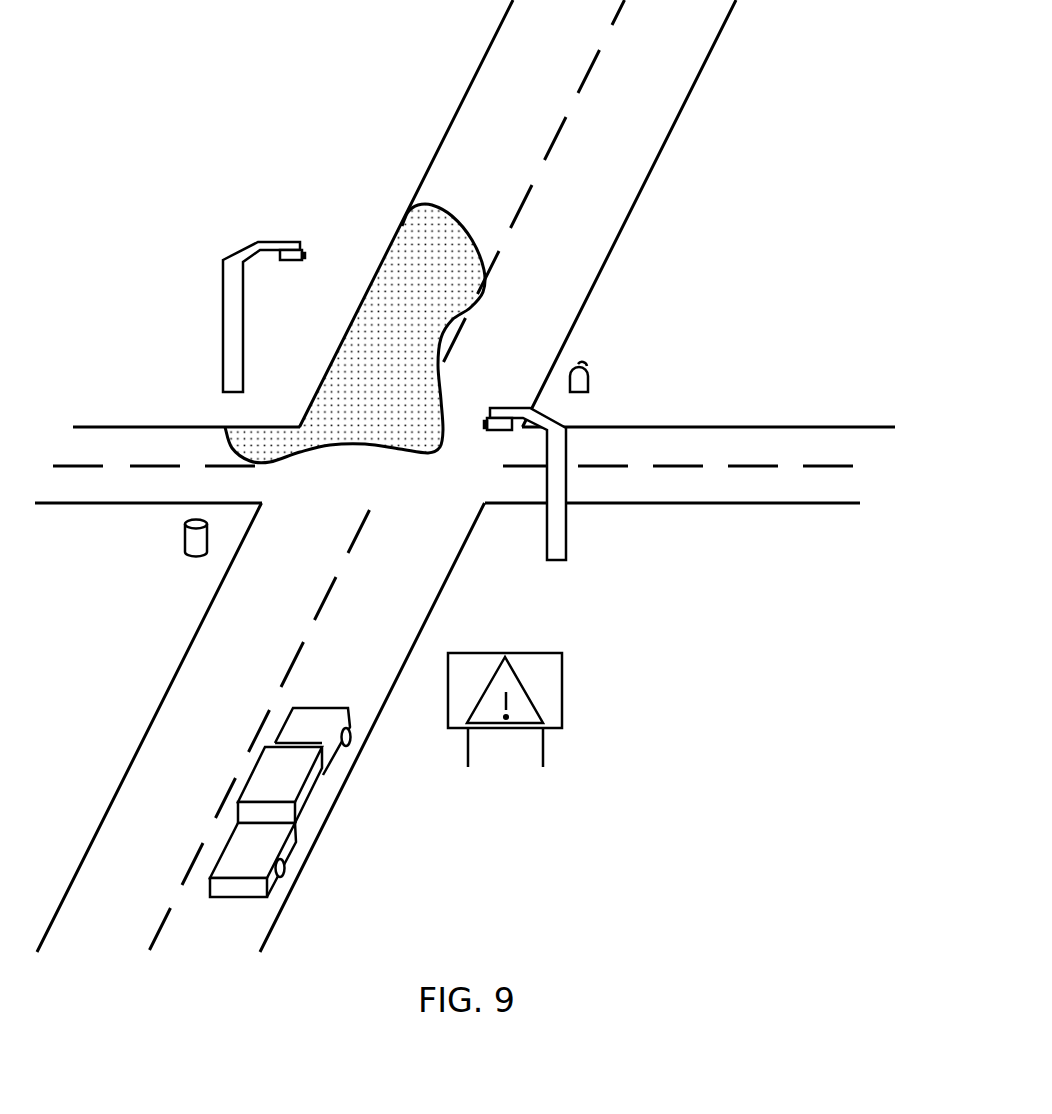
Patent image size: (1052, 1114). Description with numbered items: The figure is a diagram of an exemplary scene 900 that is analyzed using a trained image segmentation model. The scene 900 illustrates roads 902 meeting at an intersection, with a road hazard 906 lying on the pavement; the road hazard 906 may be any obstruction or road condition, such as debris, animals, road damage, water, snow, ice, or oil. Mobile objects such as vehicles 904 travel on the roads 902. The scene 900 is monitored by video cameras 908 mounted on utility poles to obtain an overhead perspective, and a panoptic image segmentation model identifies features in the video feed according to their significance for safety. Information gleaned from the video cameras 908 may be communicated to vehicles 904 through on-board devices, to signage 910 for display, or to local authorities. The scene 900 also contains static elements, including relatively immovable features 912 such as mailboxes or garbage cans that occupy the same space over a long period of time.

The scene 900 is at (209, 29).
The roads 902 is at (467, 95).
The vehicles 904 is at (310, 815).
The road hazard 906 is at (400, 227).
The video cameras 908 is at (222, 283).
The signage 910 is at (562, 692).
The immovable features 912 is at (588, 373).